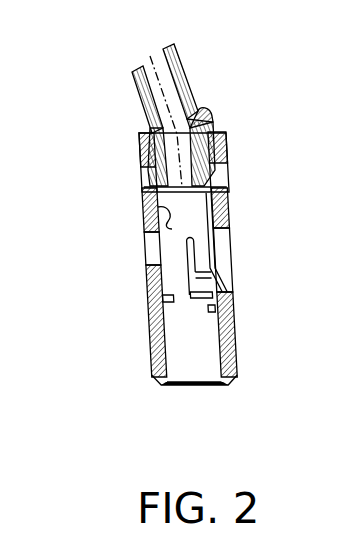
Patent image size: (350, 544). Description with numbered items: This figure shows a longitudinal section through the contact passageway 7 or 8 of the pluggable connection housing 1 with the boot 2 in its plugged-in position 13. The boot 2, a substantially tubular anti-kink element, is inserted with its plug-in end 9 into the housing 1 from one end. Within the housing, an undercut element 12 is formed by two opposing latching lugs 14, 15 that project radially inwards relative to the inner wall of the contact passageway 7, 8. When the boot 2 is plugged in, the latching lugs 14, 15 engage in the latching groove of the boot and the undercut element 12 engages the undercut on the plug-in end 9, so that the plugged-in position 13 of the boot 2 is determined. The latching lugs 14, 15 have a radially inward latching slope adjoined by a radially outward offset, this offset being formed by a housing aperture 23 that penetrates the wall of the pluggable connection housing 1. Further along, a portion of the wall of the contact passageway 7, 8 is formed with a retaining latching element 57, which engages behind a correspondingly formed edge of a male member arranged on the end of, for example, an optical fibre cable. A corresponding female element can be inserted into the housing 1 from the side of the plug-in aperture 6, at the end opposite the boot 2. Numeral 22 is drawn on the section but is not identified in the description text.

The pluggable connection housing 1 is at (105, 338).
The boot 2 is at (200, 70).
The plugged-in position 13 is at (166, 121).
The plug-in aperture 6 is at (192, 366).
The contact passageway 7 is at (190, 213).
The contact passageway 8 is at (214, 242).
The plug-in end 9 is at (209, 128).
The undercut element 12 is at (141, 156).
The latching lug 14 is at (215, 157).
The latching lug 15 is at (158, 157).
The housing wall 22 is at (143, 228).
The housing aperture 23 is at (214, 180).
The retaining latching element 57 is at (240, 261).